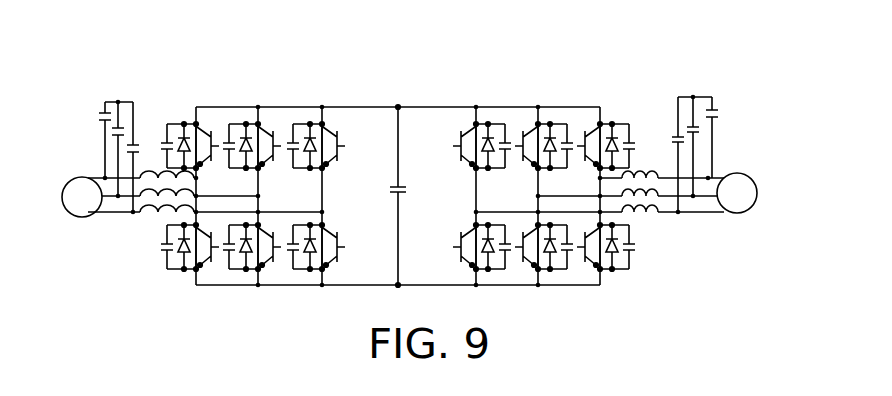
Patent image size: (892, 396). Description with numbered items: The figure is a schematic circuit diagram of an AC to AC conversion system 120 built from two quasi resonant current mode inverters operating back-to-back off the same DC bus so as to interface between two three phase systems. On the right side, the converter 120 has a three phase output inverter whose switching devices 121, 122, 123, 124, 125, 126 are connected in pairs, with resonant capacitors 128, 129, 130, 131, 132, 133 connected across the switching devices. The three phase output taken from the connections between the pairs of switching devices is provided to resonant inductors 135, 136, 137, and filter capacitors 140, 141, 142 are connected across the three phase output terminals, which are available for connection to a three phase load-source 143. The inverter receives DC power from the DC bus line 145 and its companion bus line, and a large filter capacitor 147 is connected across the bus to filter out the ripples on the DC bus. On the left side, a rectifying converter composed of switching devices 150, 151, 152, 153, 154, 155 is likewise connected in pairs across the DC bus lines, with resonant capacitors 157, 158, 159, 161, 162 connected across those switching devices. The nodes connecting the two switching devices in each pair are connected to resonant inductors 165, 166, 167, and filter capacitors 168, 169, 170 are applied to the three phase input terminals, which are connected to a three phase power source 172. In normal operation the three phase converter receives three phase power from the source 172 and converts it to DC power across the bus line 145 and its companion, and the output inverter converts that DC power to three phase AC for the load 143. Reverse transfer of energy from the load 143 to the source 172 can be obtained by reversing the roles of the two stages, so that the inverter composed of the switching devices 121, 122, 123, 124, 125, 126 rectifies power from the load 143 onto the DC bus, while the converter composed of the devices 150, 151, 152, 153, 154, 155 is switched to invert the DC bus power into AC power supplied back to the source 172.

The AC to AC conversion system 120 is at (428, 100).
The switching device 121 is at (466, 167).
The switching device 122 is at (473, 228).
The switching device 123 is at (531, 170).
The switching device 124 is at (527, 264).
The switching device 125 is at (595, 164).
The switching device 126 is at (584, 265).
The resonant capacitor 128 is at (503, 140).
The resonant capacitor 129 is at (505, 257).
The resonant capacitor 130 is at (566, 140).
The resonant capacitor 131 is at (566, 258).
The resonant capacitor 132 is at (627, 140).
The resonant capacitor 133 is at (630, 255).
The resonant inductor 135 is at (636, 218).
The resonant inductor 136 is at (652, 198).
The resonant inductor 137 is at (642, 172).
The filter capacitor 140 is at (677, 135).
The filter capacitor 141 is at (697, 147).
The filter capacitor 142 is at (709, 98).
The three phase load-source 143 is at (746, 201).
The DC bus line 145 is at (363, 107).
The filter capacitor 147 is at (397, 200).
The switching device 150 is at (340, 132).
The switching device 151 is at (328, 266).
The switching device 152 is at (263, 165).
The switching device 153 is at (263, 267).
The switching device 154 is at (201, 165).
The switching device 155 is at (201, 267).
The resonant capacitor 157 is at (296, 140).
The resonant capacitor 158 is at (291, 256).
The resonant capacitor 159 is at (231, 140).
The resonant capacitor 161 is at (166, 132).
The resonant capacitor 162 is at (163, 256).
The resonant inductor 165 is at (151, 172).
The resonant inductor 166 is at (147, 206).
The resonant inductor 167 is at (157, 218).
The filter capacitor 168 is at (134, 144).
The filter capacitor 169 is at (128, 120).
The filter capacitor 170 is at (105, 110).
The three phase power source 172 is at (63, 186).